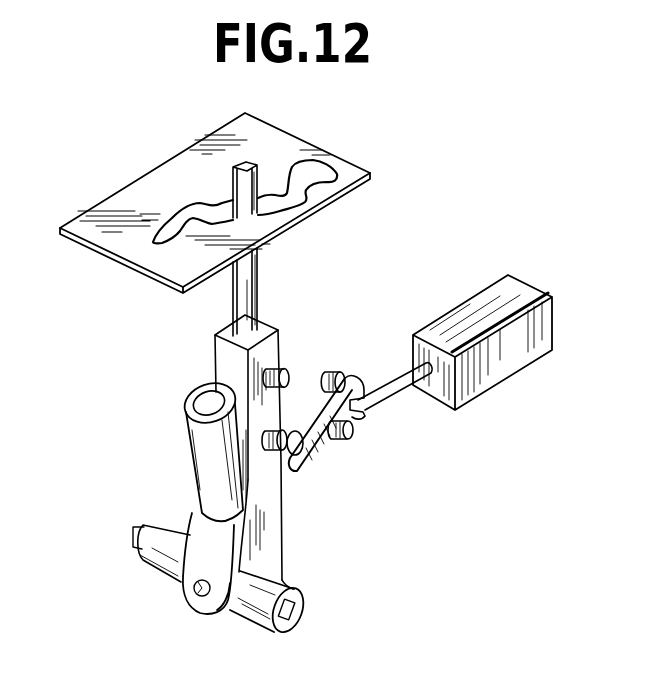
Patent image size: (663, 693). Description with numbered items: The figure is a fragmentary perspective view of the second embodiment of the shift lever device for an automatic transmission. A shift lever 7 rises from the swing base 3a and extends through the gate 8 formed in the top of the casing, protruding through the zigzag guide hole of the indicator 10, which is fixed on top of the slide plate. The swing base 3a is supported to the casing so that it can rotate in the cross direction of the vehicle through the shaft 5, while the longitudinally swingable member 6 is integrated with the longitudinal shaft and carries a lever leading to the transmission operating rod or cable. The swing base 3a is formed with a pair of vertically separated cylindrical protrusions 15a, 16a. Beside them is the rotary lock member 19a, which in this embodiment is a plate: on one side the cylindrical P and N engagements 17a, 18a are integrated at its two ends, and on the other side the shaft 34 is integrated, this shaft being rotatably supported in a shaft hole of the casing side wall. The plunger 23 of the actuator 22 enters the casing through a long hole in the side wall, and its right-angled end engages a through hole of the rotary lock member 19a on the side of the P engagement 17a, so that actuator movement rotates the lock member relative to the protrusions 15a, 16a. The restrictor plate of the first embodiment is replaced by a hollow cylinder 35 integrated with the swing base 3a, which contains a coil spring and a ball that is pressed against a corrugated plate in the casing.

The swing base 3a is at (263, 550).
The shaft 5 is at (190, 594).
The longitudinally swingable member 6 is at (257, 608).
The shift lever 7 is at (240, 188).
The gate 8 is at (335, 180).
The indicator 10 is at (268, 152).
The cylindrical protrusion 15a is at (263, 378).
The cylindrical protrusion 16a is at (264, 443).
The P engagement 17a is at (338, 372).
The N engagement 18a is at (295, 431).
The rotary lock member 19a is at (312, 453).
The actuator 22 is at (533, 348).
The plunger 23 is at (400, 388).
The shaft 34 is at (352, 436).
The hollow cylinder 35 is at (207, 443).